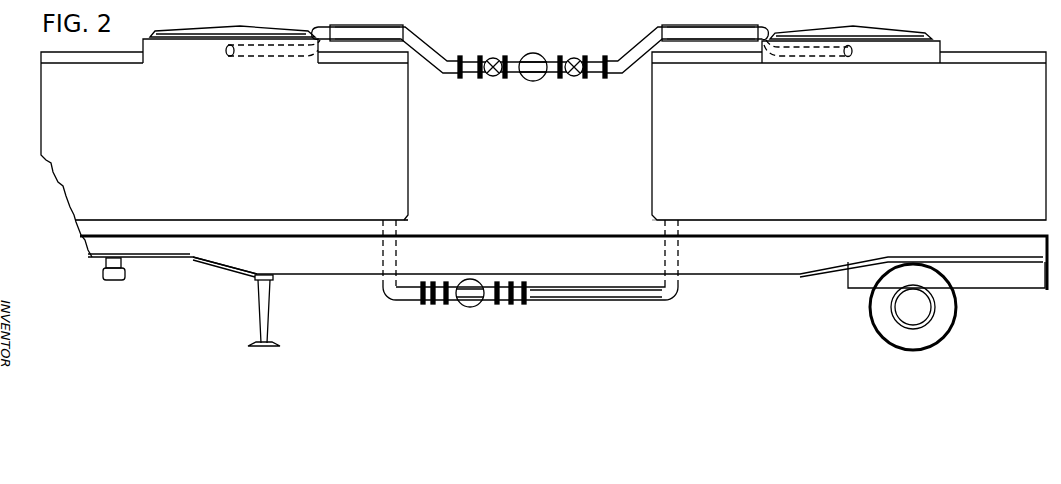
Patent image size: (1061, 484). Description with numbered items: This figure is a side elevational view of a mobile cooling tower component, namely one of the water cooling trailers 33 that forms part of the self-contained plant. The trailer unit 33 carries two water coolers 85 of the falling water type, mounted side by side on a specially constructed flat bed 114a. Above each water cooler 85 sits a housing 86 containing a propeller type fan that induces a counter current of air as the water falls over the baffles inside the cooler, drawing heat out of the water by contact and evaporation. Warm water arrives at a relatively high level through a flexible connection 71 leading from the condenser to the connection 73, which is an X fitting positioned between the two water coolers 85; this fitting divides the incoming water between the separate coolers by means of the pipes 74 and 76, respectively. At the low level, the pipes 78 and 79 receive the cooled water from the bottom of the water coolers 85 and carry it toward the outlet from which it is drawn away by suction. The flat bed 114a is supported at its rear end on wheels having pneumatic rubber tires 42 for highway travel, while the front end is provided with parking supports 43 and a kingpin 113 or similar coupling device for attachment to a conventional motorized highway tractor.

The water cooling trailer 33 is at (41, 85).
The housing 86 is at (150, 37).
The pipe 76 is at (443, 72).
The pipe 74 is at (646, 60).
The flexible connection 71 is at (546, 80).
The connection 73 is at (525, 57).
The water cooler 85 is at (170, 198).
The kingpin 113 is at (112, 282).
The flat bed 114a is at (231, 256).
The parking supports 43 is at (255, 300).
The pipe 79 is at (400, 300).
The pipe 78 is at (604, 300).
The pneumatic rubber tires 42 is at (946, 331).